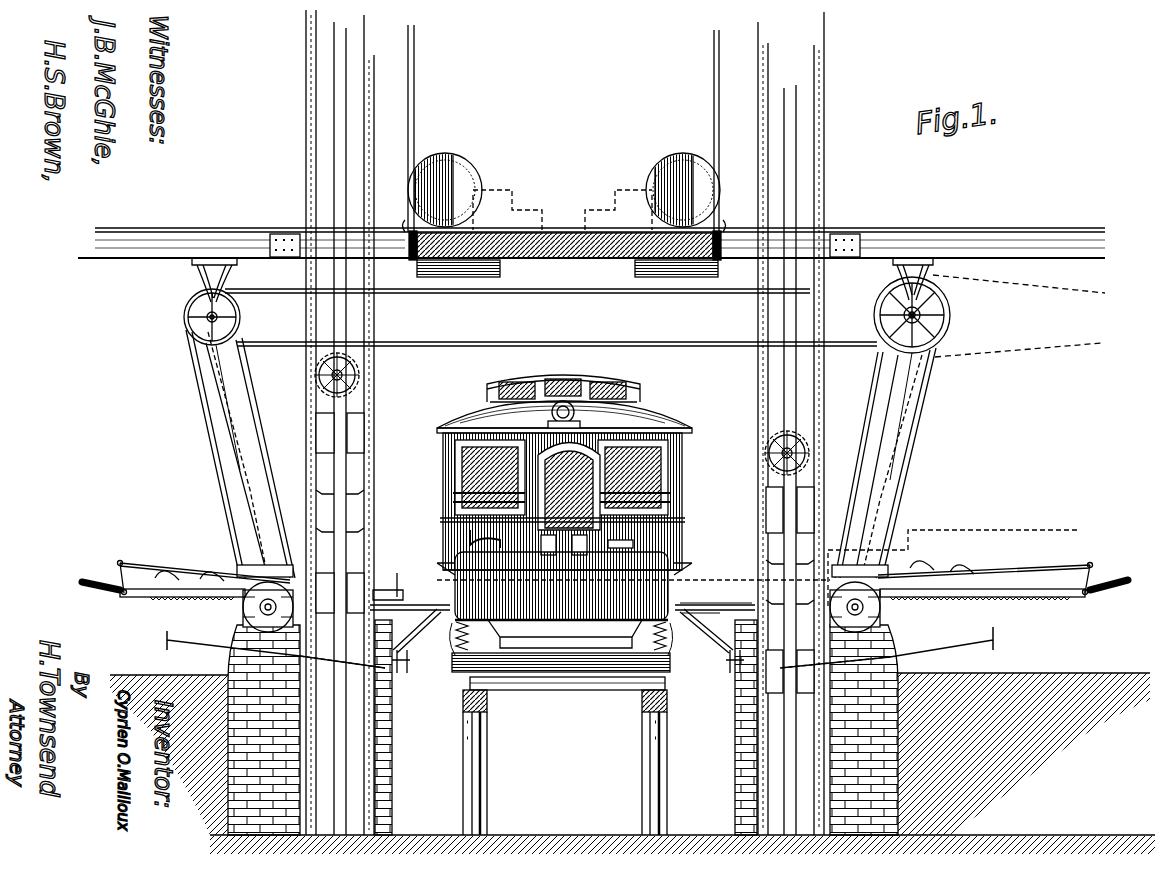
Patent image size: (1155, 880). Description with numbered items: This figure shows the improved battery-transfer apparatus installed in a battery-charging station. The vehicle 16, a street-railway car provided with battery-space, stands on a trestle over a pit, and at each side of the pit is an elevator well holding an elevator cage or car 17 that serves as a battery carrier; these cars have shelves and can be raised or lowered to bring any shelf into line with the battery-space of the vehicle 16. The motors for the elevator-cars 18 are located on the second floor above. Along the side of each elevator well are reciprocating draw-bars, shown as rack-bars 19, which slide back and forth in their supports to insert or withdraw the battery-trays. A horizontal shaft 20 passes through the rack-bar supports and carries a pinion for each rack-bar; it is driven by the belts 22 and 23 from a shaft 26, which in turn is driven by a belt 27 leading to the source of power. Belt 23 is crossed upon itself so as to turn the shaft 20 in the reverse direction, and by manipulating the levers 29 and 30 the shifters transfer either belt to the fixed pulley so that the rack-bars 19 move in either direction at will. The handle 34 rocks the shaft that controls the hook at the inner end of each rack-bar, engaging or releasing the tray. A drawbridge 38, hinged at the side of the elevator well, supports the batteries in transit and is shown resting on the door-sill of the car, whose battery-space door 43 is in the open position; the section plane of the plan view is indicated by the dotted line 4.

The dotted line 4 4 is at (733, 563).
The vehicle 16 is at (680, 462).
The elevator cage or car 17 is at (357, 440).
The motors for the elevator-cars 18 is at (472, 172).
The rack-bar 19 is at (168, 598).
The horizontal shaft 20 is at (245, 606).
The belt 22 is at (238, 478).
The belt 23 is at (216, 385).
The shaft 26 is at (946, 313).
The belt 27 is at (1019, 316).
The lever 29 is at (997, 558).
The lever 30 is at (947, 543).
The handle 34 is at (1111, 597).
The drawbridge 38 is at (700, 608).
The door of the battery-space 43 is at (690, 638).